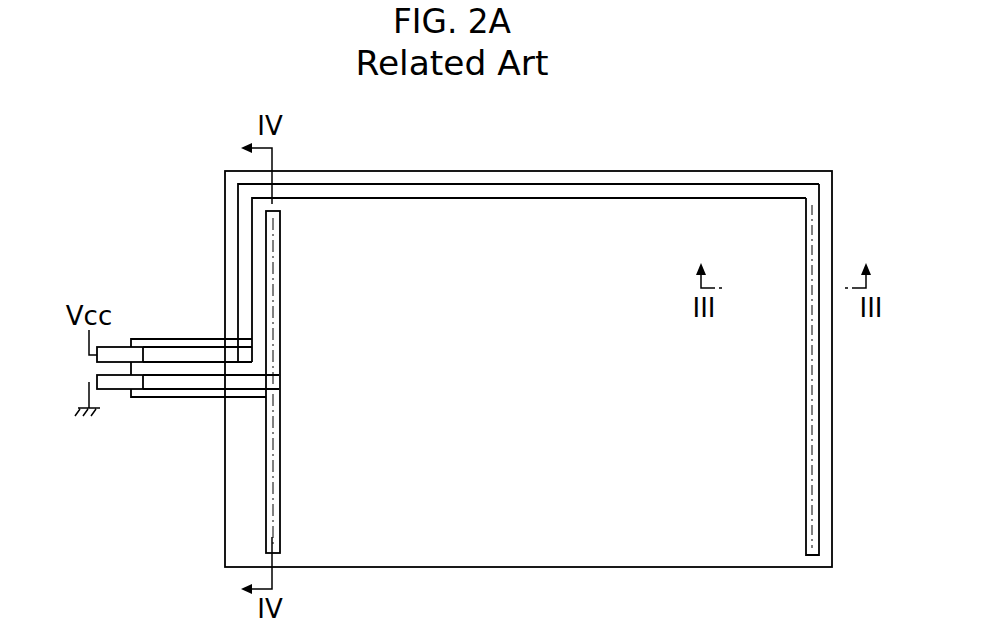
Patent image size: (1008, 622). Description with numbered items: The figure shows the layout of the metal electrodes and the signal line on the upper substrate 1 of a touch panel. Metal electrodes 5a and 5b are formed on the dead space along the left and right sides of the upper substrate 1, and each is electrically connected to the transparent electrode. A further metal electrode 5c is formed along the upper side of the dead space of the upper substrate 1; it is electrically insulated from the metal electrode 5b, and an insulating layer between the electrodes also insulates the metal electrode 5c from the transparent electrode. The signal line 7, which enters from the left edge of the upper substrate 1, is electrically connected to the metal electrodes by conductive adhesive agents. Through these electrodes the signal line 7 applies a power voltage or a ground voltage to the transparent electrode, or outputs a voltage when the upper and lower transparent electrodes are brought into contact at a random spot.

The upper substrate 1 is at (631, 166).
The metal electrode 5a is at (272, 295).
The metal electrode 5b is at (812, 427).
The metal electrode 5c is at (382, 192).
The signal line 7 is at (167, 338).